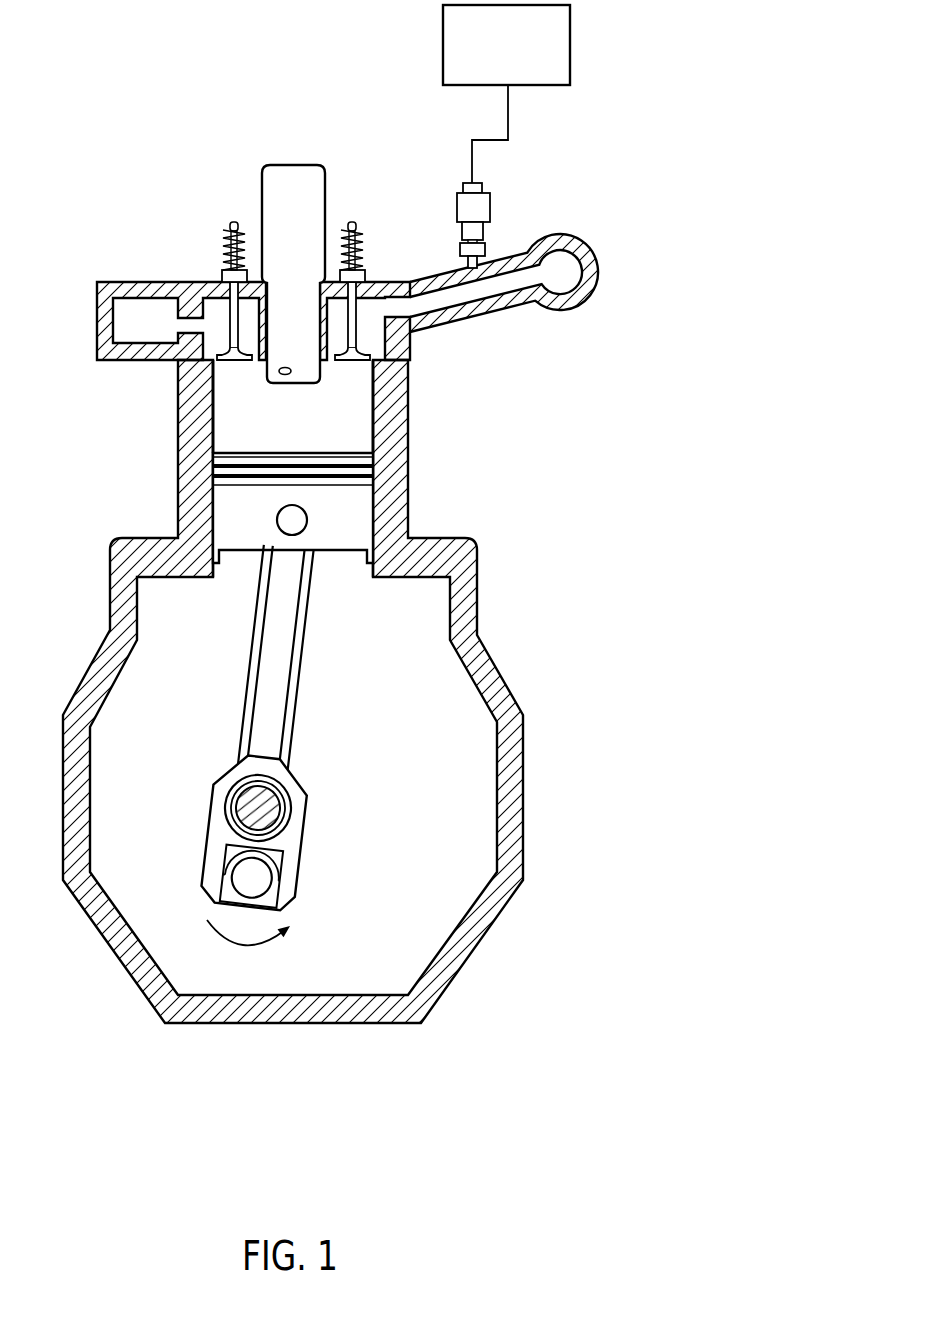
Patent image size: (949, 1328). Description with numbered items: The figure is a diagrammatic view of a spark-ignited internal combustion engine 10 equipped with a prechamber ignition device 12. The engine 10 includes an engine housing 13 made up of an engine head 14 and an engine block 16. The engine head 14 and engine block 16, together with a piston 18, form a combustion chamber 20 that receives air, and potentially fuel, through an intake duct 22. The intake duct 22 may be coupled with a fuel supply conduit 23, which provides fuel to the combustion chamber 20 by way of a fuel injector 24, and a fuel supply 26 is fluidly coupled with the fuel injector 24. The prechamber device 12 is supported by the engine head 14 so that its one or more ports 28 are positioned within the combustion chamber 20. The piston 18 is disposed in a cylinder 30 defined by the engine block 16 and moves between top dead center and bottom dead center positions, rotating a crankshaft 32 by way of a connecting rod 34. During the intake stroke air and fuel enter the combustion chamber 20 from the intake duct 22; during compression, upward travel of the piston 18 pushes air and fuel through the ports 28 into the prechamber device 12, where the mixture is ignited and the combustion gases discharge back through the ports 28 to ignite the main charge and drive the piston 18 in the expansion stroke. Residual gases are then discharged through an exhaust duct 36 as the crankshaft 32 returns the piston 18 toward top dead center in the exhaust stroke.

The internal combustion engine 10 is at (42, 242).
The prechamber ignition device 12 is at (325, 190).
The engine housing 13 is at (228, 312).
The engine head 14 is at (197, 282).
The engine block 16 is at (410, 436).
The piston 18 is at (358, 505).
The combustion chamber 20 is at (228, 426).
The intake duct 22 is at (508, 307).
The fuel supply conduit 23 is at (530, 128).
The fuel injector 24 is at (490, 204).
The fuel supply 26 is at (572, 12).
The ports 28 is at (286, 378).
The cylinder 30 is at (370, 425).
The crankshaft 32 is at (204, 808).
The connecting rod 34 is at (252, 648).
The exhaust duct 36 is at (97, 296).